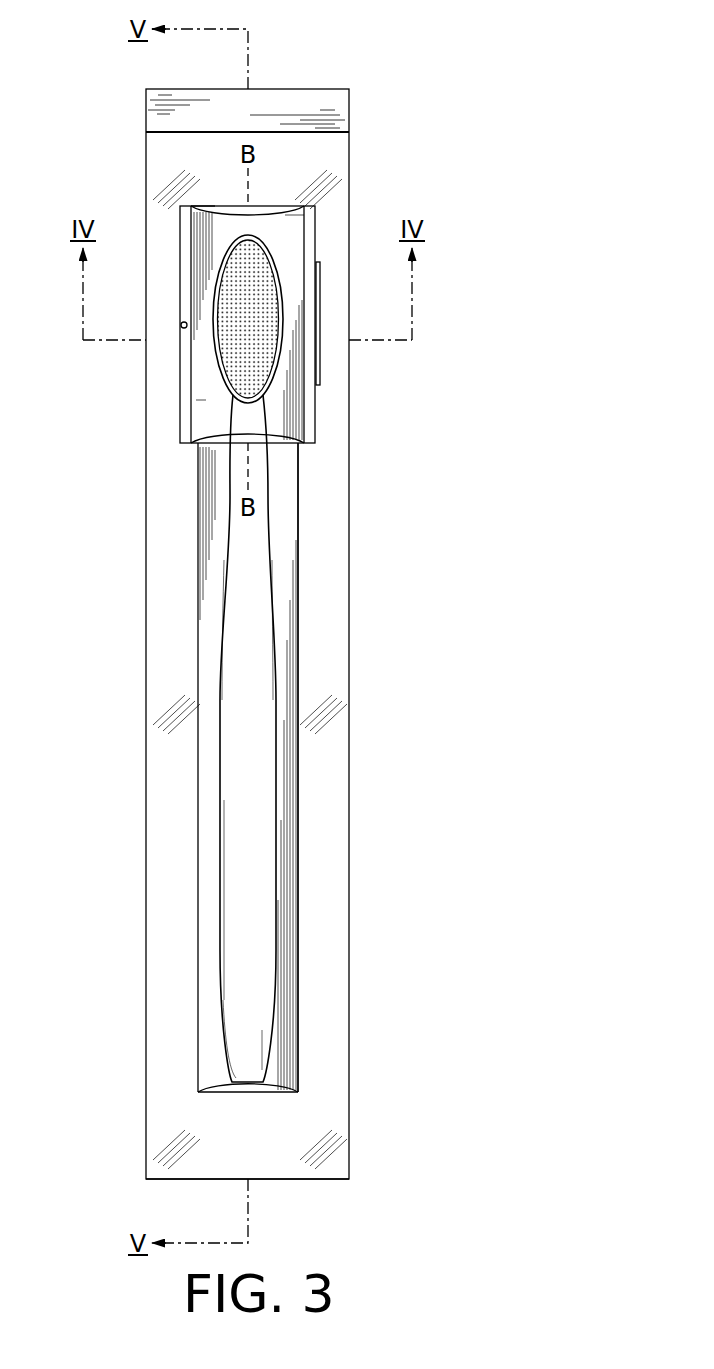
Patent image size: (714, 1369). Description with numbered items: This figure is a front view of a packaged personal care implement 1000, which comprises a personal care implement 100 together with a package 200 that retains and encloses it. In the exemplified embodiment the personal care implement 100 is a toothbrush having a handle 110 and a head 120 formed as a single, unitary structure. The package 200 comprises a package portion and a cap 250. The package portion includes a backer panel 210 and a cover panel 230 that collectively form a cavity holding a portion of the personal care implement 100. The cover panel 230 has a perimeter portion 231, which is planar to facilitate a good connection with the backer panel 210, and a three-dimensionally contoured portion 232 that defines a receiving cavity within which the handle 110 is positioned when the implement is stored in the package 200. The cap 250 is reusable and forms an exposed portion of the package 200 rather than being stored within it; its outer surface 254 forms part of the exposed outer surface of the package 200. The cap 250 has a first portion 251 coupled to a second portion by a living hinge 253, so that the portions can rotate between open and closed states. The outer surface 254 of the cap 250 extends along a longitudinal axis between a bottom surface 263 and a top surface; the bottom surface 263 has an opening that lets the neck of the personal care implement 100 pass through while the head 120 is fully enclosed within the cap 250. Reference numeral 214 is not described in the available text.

The packaged personal care implement 1000 is at (507, 150).
The personal care implement 100 is at (257, 658).
The handle 110 is at (248, 975).
The head 120 is at (257, 372).
The package 200 is at (144, 527).
The backer panel 210 is at (285, 103).
The peel flap 214 is at (215, 207).
The cover panel 230 is at (322, 1157).
The perimeter portion 231 is at (319, 905).
The three-dimensionally contoured portion 232 is at (280, 787).
The cap 250 is at (215, 242).
The first portion 251 is at (290, 238).
The hinge 253 is at (317, 352).
The outer surface 254 is at (208, 410).
The bottom surface 263 is at (277, 447).